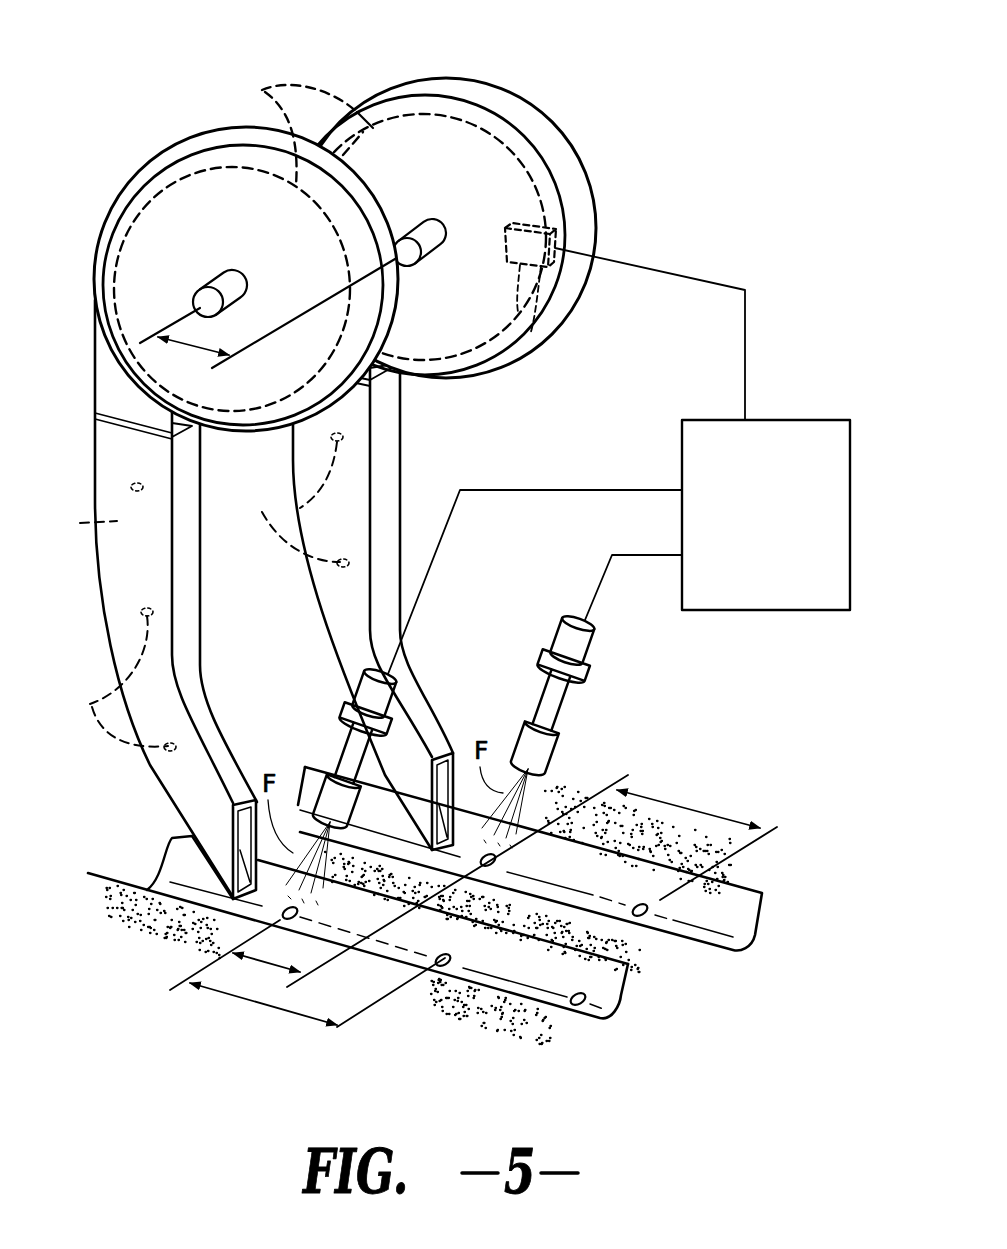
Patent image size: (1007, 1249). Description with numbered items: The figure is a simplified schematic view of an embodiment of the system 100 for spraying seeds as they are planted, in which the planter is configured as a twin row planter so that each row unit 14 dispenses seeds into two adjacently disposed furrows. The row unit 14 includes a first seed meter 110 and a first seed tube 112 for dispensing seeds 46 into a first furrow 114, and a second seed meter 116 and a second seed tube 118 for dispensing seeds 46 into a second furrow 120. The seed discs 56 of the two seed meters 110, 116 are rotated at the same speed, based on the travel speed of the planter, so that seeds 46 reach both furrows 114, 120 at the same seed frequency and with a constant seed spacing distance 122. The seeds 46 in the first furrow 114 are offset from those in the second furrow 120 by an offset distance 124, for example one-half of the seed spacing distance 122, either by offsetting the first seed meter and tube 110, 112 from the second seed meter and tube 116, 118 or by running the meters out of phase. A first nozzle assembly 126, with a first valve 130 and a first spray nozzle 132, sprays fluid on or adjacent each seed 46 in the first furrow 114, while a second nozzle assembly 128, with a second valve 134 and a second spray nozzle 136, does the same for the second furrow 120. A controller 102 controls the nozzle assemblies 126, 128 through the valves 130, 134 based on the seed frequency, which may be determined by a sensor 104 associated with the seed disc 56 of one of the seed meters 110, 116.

The row unit 14 is at (165, 88).
The seeds 46 is at (576, 995).
The seed disc 56 is at (296, 131).
The system 100 is at (720, 172).
The controller 102 is at (790, 528).
The sensor 104 is at (521, 314).
The first seed meter 110 is at (149, 171).
The first seed tube 112 is at (117, 523).
The first furrow 114 is at (628, 990).
The second seed meter 116 is at (582, 168).
The second seed tube 118 is at (388, 472).
The second furrow 120 is at (760, 923).
The seed spacing distance 122 is at (683, 803).
The offset distance 124 is at (262, 967).
The first nozzle assembly 126 is at (323, 762).
The second nozzle assembly 128 is at (549, 706).
The first valve 130 is at (375, 690).
The first spray nozzle 132 is at (300, 805).
The second valve 134 is at (568, 638).
The second spray nozzle 136 is at (550, 752).